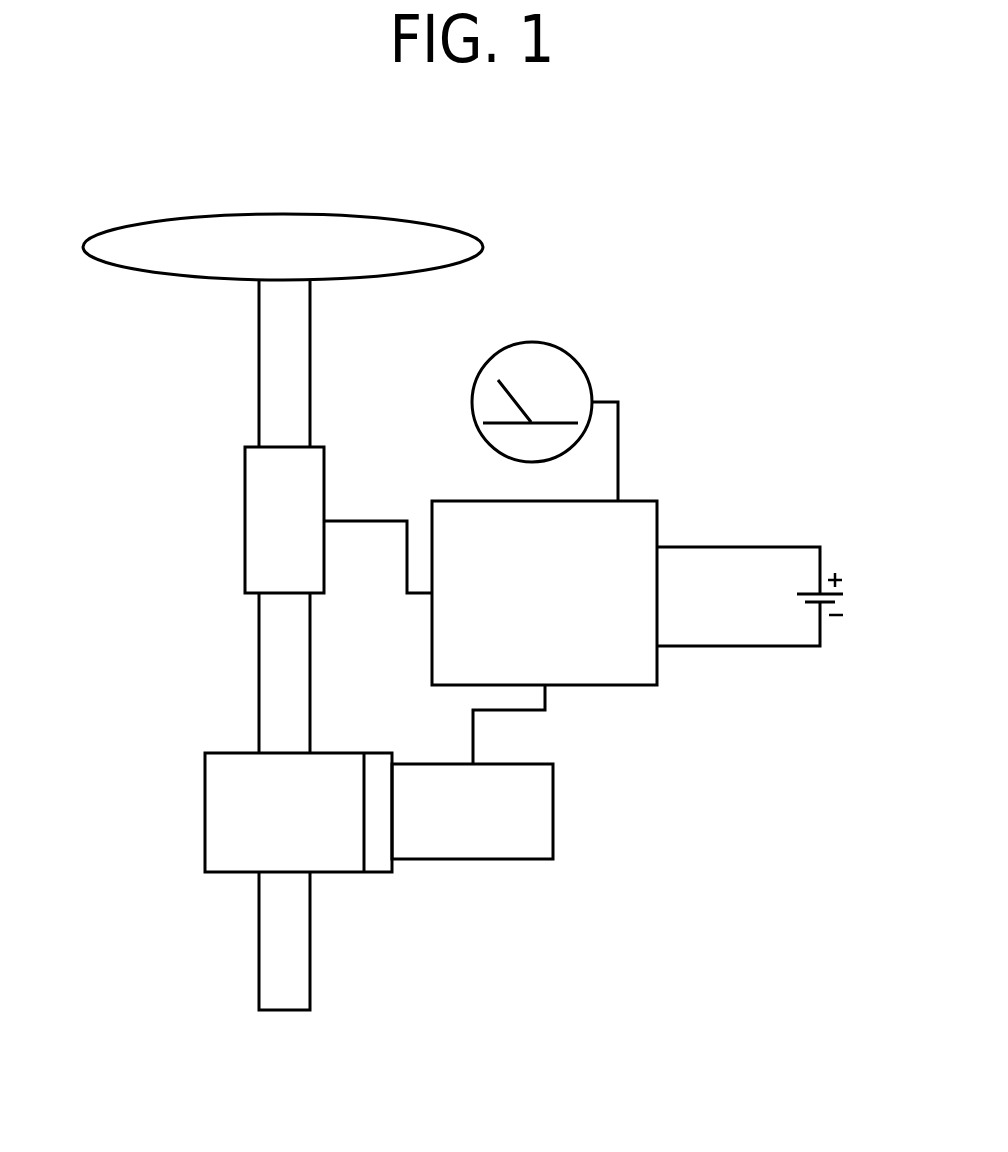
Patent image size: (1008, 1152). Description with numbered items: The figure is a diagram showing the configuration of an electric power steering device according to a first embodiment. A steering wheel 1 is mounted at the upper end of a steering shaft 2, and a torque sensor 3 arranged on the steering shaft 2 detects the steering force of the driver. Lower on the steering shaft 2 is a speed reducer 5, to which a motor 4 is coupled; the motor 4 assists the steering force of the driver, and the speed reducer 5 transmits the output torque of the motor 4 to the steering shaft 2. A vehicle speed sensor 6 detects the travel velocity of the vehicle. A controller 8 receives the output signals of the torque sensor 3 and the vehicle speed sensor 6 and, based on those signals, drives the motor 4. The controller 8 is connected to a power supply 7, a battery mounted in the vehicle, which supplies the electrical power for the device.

The steering wheel 1 is at (382, 230).
The steering shaft 2 is at (272, 400).
The torque sensor 3 is at (258, 549).
The motor 4 is at (540, 810).
The speed reducer 5 is at (218, 810).
The vehicle speed sensor 6 is at (558, 358).
The power supply (battery) 7 is at (850, 598).
The controller 8 is at (635, 510).